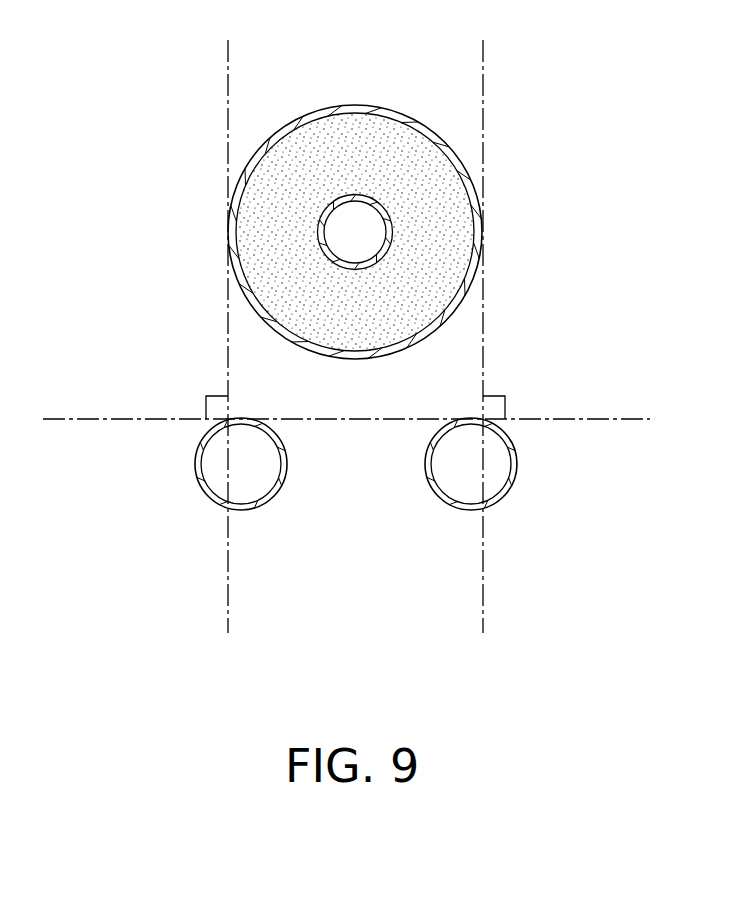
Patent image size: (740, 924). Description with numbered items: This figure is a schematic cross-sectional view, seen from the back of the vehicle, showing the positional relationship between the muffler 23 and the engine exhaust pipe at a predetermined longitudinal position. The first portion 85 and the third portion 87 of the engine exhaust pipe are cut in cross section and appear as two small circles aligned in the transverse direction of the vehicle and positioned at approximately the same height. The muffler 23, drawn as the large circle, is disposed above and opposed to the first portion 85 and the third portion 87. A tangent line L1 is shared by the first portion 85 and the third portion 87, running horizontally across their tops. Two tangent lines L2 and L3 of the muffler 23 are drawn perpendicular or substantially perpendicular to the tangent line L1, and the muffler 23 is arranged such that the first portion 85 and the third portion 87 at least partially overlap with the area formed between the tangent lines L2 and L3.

The muffler 23 is at (335, 105).
The first portion 85 is at (200, 487).
The third portion 87 is at (507, 488).
The tangent line L1 is at (358, 420).
The tangent line L2 is at (228, 330).
The tangent line L3 is at (483, 328).